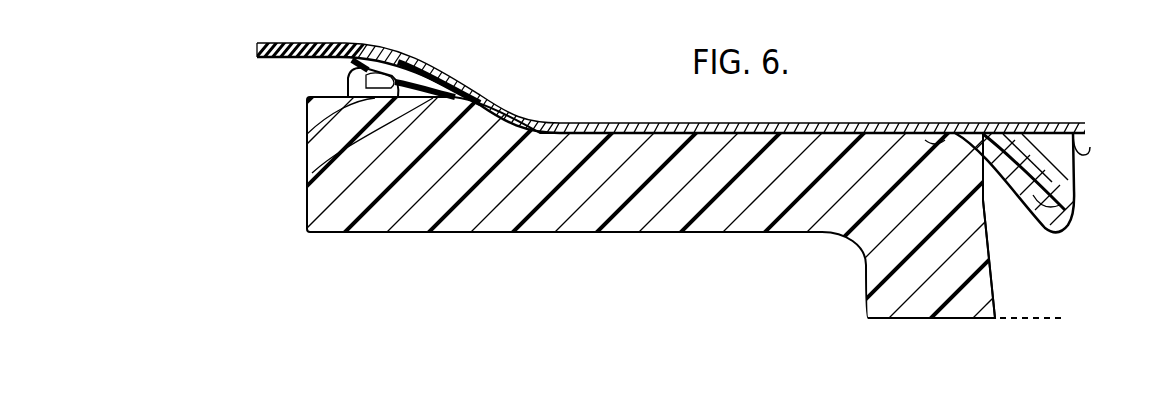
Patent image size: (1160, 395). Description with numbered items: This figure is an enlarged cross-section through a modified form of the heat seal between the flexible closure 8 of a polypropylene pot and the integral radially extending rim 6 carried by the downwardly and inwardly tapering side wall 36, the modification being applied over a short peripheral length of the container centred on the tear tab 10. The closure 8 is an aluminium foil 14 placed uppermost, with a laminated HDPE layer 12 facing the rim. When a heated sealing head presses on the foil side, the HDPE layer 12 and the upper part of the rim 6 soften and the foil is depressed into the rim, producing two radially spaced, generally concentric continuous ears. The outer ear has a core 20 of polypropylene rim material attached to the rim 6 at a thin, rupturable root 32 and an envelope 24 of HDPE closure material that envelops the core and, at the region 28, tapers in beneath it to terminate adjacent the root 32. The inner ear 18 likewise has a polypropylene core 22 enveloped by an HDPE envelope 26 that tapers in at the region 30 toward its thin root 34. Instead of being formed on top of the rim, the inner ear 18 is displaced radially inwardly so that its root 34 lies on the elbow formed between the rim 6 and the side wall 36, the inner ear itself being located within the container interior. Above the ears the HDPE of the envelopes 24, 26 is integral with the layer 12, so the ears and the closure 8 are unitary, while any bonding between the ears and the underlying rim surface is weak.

The rim 6 is at (688, 198).
The flexible closure 8 is at (1094, 150).
The tear tab 10 is at (297, 43).
The HDPE layer 12 is at (392, 77).
The foil 14 is at (450, 82).
The inner ear 18 is at (1078, 207).
The core 20 is at (307, 125).
The core 22 is at (1052, 207).
The envelope 24 is at (348, 83).
The envelope 26 is at (1074, 180).
The tapered portion of envelope 28 is at (312, 173).
The tapered portion of envelope 30 is at (983, 133).
The root 32 is at (440, 98).
The root 34 is at (933, 143).
The side wall 36 is at (992, 265).